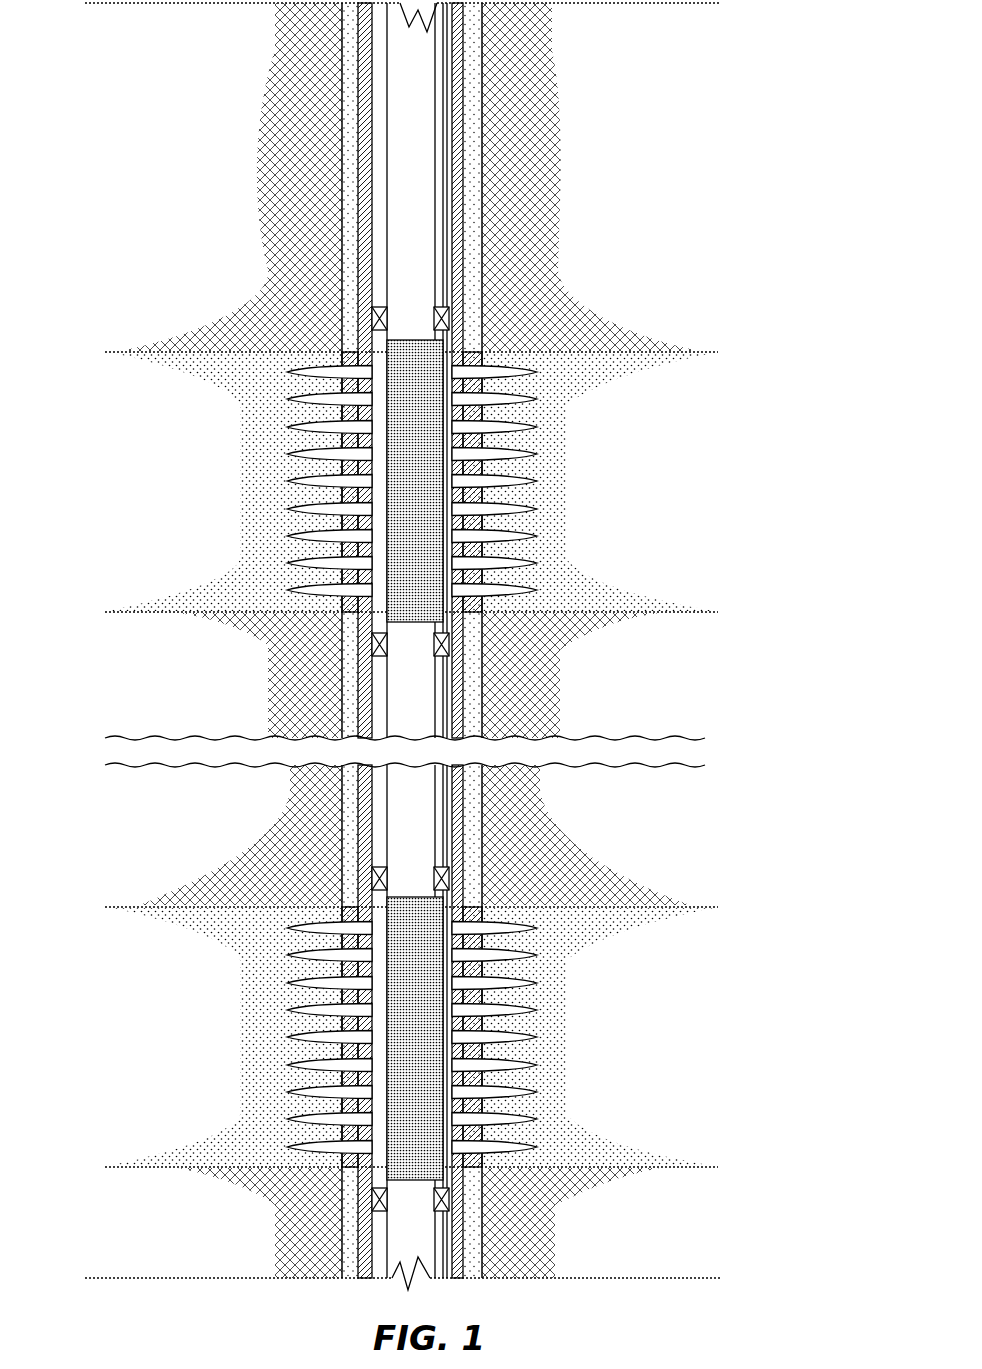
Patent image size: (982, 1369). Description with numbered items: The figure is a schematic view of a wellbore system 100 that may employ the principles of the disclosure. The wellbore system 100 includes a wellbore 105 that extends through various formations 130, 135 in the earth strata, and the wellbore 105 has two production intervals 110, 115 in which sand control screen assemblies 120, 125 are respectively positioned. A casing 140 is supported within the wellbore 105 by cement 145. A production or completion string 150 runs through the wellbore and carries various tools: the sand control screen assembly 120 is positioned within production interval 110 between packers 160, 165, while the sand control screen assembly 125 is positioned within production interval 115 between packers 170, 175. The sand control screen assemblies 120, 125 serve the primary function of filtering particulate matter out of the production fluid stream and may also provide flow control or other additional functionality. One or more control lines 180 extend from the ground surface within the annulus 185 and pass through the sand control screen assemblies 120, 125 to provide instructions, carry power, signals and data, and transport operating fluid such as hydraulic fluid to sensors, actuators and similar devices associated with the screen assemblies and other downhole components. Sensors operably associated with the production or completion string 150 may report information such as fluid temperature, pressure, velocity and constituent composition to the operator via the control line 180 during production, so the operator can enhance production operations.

The wellbore system 100 is at (745, 68).
The wellbore 105 is at (473, 147).
The production interval 110 is at (447, 552).
The production interval 115 is at (455, 1133).
The sand control screen assembly 120 is at (453, 472).
The sand control screen assembly 125 is at (453, 998).
The formation 130 is at (670, 507).
The formation 135 is at (672, 1045).
The casing 140 is at (457, 190).
The cement 145 is at (475, 232).
The production or completion string 150 is at (442, 283).
The packer 160 is at (449, 317).
The packer 165 is at (449, 645).
The packer 170 is at (449, 878).
The packer 175 is at (449, 1200).
The control line 180 is at (447, 80).
The annulus 185 is at (455, 118).